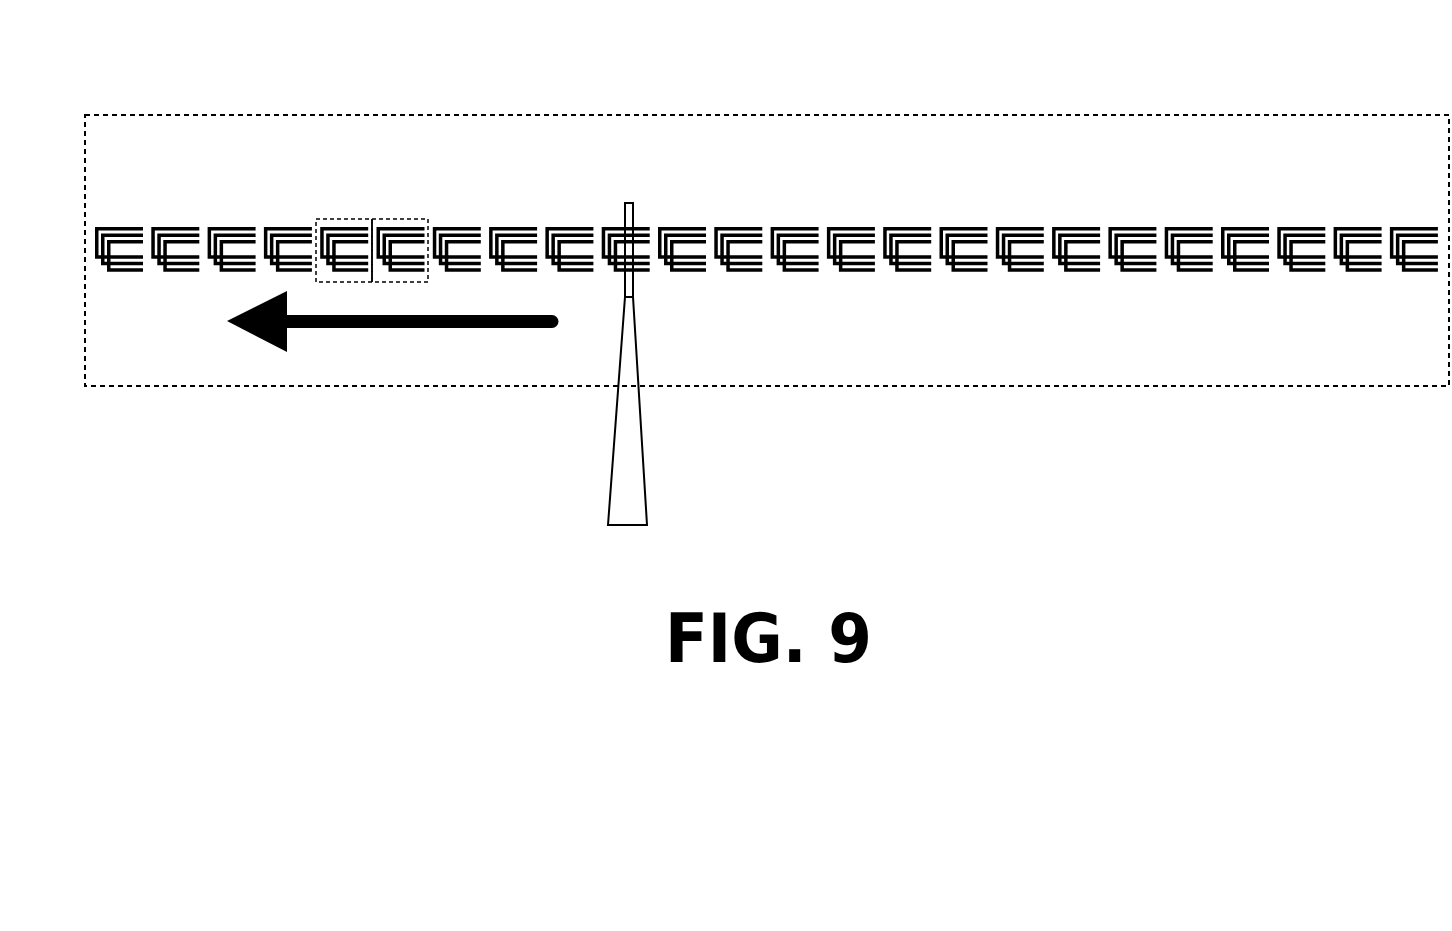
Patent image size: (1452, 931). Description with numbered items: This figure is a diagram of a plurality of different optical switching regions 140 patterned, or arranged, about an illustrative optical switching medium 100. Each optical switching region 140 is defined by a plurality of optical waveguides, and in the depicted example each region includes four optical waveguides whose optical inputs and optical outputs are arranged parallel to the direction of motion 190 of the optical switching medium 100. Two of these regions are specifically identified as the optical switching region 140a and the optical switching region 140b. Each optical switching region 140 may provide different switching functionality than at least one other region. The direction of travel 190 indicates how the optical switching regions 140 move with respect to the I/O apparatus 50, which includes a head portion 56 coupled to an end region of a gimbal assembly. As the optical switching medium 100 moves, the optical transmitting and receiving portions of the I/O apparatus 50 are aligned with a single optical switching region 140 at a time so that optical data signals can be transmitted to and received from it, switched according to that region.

The optical switching medium 100 is at (243, 115).
The optical switching regions 140 is at (150, 200).
The optical switching region 140a is at (340, 218).
The optical switching region 140b is at (407, 218).
The direction of travel 190 is at (430, 328).
The head portion 56 is at (623, 203).
The I/O apparatus 50 is at (585, 490).